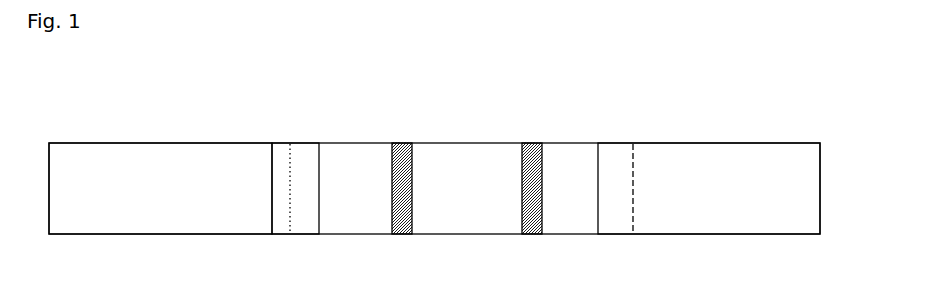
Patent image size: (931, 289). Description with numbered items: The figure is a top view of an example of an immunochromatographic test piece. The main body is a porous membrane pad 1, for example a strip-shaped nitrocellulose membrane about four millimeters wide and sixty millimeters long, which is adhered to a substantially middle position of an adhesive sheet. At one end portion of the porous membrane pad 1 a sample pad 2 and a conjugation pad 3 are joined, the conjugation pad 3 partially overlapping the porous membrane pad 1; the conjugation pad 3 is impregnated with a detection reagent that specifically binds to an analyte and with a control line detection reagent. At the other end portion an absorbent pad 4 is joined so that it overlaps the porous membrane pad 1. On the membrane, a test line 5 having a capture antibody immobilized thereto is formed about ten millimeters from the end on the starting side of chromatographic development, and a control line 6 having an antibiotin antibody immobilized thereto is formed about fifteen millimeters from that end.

The porous membrane pad 1 is at (461, 130).
The sample pad 2 is at (170, 125).
The conjugation pad 3 is at (300, 125).
The absorbent pad 4 is at (727, 127).
The test line 5 is at (402, 133).
The control line 6 is at (534, 130).